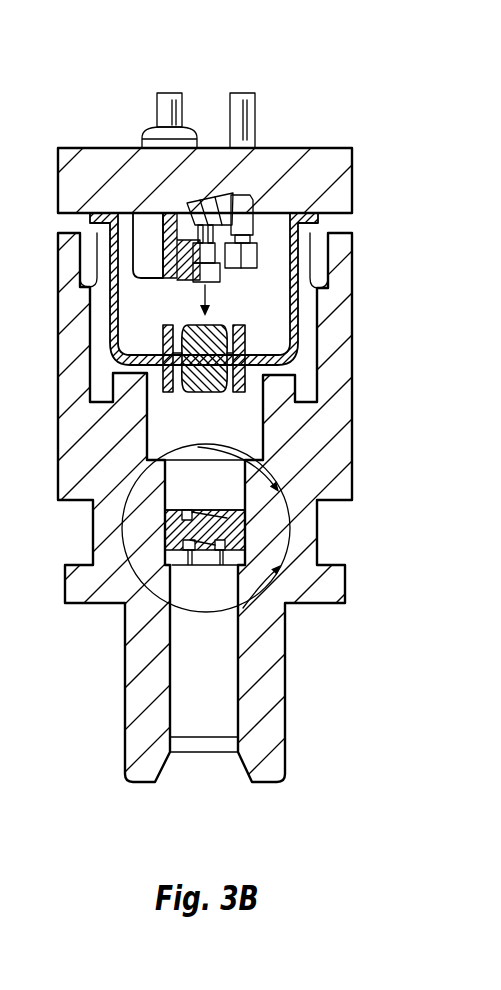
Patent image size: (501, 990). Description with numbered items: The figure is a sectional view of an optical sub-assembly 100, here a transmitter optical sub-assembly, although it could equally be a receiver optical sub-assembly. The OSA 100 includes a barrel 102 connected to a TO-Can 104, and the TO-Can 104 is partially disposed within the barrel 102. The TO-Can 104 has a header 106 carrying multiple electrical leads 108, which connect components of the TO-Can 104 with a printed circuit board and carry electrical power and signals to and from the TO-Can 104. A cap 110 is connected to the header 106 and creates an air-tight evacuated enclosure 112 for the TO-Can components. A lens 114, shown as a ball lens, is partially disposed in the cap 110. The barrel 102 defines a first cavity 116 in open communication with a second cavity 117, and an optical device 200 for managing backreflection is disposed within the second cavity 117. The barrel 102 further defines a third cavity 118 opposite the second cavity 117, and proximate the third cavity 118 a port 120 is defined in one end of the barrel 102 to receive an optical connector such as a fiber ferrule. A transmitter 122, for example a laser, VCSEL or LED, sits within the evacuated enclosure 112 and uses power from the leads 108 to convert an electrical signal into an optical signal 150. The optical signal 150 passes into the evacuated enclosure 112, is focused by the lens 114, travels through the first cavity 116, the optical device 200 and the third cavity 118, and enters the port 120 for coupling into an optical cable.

The optical sub-assembly 100 is at (120, 68).
The barrel 102 is at (65, 338).
The TO-Can 104 is at (360, 162).
The header 106 is at (312, 147).
The electrical leads 108 is at (262, 68).
The cap 110 is at (230, 270).
The evacuated enclosure 112 is at (168, 314).
The lens 114 is at (247, 333).
The first cavity 116 is at (248, 434).
The second cavity 117 is at (233, 502).
The third cavity 118 is at (190, 566).
The port 120 is at (207, 680).
The transmitter 122 is at (262, 213).
The optical signal 150 is at (212, 297).
The optical device 200 is at (245, 509).